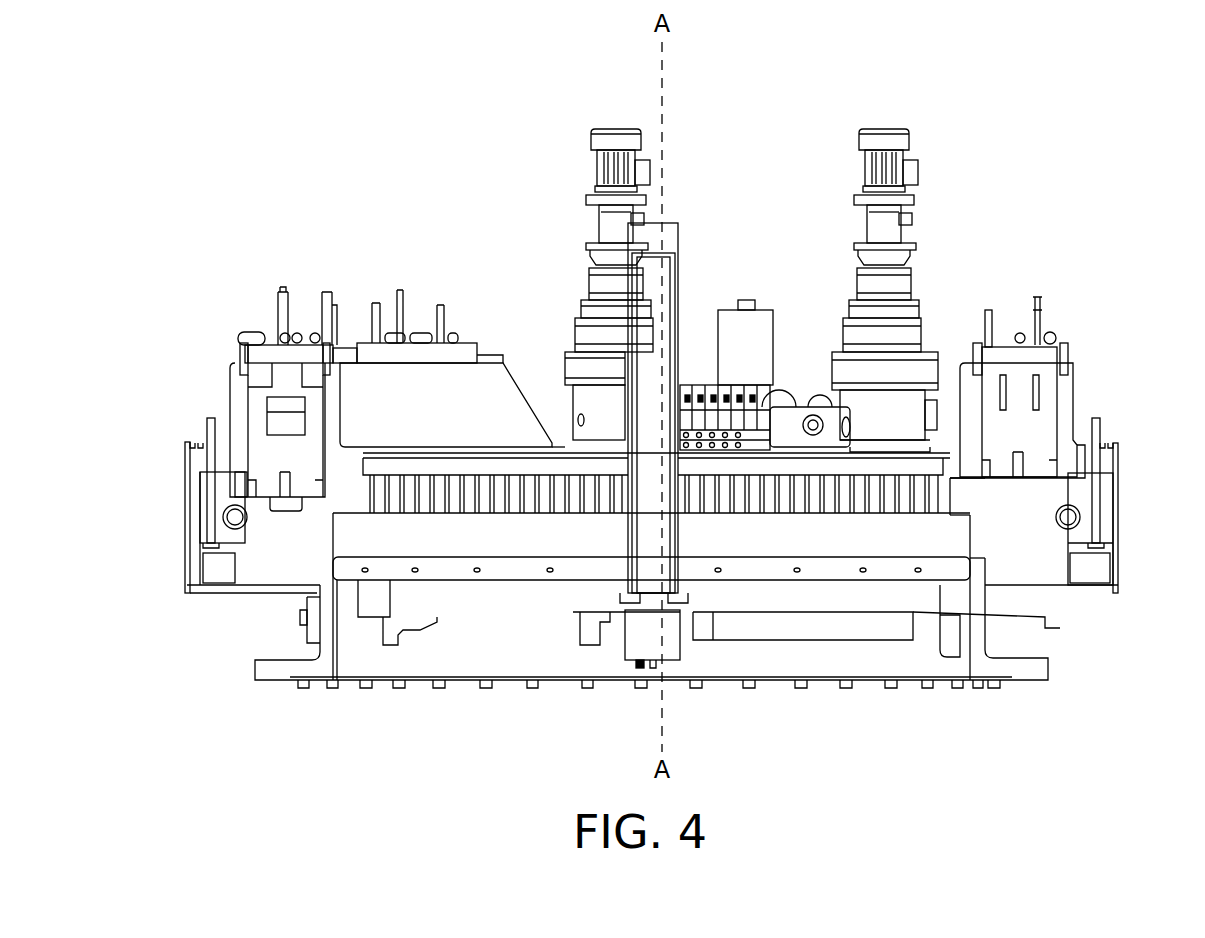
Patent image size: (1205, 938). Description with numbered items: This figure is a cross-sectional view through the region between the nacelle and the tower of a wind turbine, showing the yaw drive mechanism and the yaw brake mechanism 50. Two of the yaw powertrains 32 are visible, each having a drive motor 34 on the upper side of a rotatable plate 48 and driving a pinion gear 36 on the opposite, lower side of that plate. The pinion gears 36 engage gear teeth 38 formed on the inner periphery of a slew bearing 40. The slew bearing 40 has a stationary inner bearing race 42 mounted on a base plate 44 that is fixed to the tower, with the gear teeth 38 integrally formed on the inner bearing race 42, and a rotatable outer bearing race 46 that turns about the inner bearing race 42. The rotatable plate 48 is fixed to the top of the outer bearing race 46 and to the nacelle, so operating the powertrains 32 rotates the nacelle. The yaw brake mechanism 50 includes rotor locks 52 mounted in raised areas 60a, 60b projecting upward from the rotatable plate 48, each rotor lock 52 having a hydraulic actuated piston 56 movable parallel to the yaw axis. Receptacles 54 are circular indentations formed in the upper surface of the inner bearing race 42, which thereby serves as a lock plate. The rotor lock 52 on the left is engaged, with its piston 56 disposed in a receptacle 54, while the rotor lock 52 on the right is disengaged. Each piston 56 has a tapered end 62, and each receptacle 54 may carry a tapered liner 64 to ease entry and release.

The yaw powertrain 32 is at (556, 236).
The drive motor 34 is at (611, 129).
The pinion gear 36 is at (590, 500).
The gear teeth 38 is at (787, 500).
The slew bearing 40 is at (1047, 570).
The inner bearing race 42 is at (282, 532).
The base plate 44 is at (287, 676).
The outer bearing race 46 is at (1105, 533).
The rotatable plate 48 is at (1105, 458).
The yaw brake mechanism 50 is at (1090, 353).
The rotor lock 52 is at (252, 400).
The receptacle 54 is at (245, 483).
The hydraulic actuated piston 56 is at (268, 455).
The raised area 60a is at (1068, 431).
The raised area 60b is at (230, 398).
The end 62 is at (1050, 465).
The tapered liner 64 is at (245, 497).